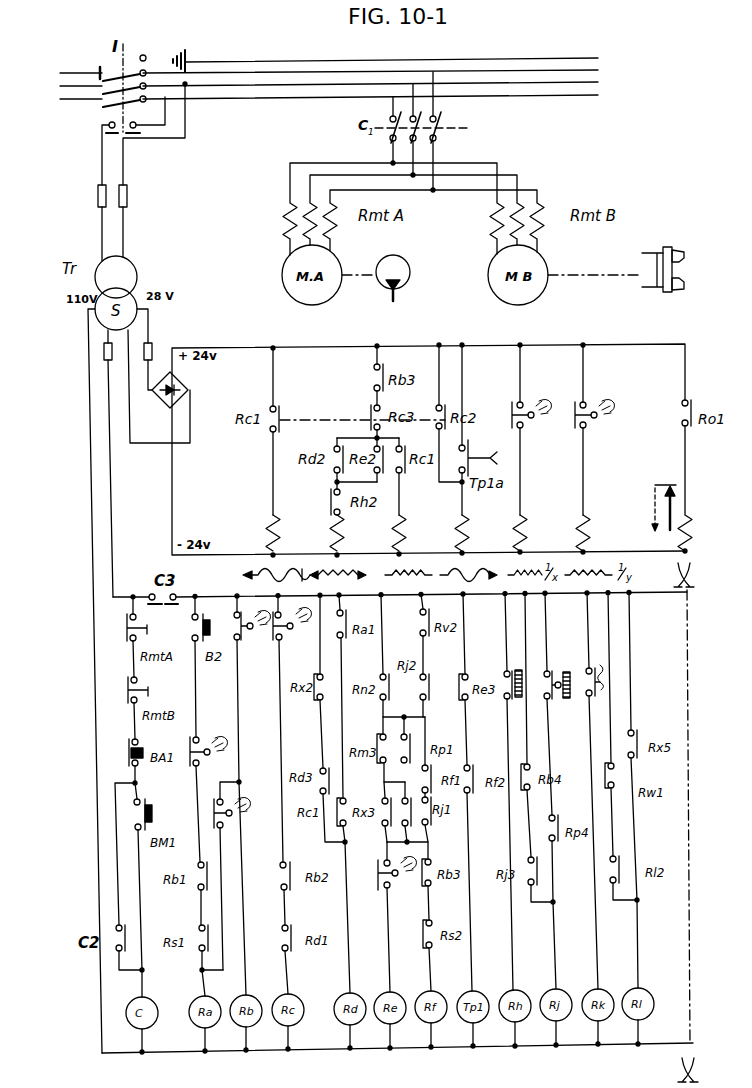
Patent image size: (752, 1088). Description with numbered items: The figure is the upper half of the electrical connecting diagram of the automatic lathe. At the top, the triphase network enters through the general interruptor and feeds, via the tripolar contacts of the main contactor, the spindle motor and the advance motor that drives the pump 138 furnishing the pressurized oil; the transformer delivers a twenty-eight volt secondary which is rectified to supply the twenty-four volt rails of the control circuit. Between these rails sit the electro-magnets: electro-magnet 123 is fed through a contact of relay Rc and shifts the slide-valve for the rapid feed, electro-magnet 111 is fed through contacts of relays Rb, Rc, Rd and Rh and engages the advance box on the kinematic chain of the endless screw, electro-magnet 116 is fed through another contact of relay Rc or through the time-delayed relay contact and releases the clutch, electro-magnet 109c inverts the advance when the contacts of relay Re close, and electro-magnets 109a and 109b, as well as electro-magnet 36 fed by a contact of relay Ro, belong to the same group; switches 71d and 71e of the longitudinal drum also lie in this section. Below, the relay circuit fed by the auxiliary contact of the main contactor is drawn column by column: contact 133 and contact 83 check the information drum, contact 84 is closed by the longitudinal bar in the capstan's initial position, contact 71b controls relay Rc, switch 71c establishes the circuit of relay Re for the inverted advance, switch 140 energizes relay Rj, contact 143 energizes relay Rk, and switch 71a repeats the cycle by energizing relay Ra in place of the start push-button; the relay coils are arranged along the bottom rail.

The electro-magnet 36 is at (704, 476).
The switch 71a is at (241, 820).
The contact 71b is at (292, 636).
The switch 71c is at (390, 886).
The switch 71d is at (533, 422).
The switch 71e is at (597, 422).
The contact 83 is at (252, 637).
The contact 84 is at (515, 673).
The electro-magnet 109a is at (513, 533).
The electro-magnet 109b is at (610, 533).
The electro-magnet 109c is at (386, 533).
The electro-magnet 111 is at (325, 533).
The electro-magnet 116 is at (449, 533).
The electro-magnet 123 is at (258, 533).
The contact 133 is at (209, 739).
The pump 138 is at (406, 278).
The switch 140 is at (560, 694).
The contact 143 is at (602, 668).